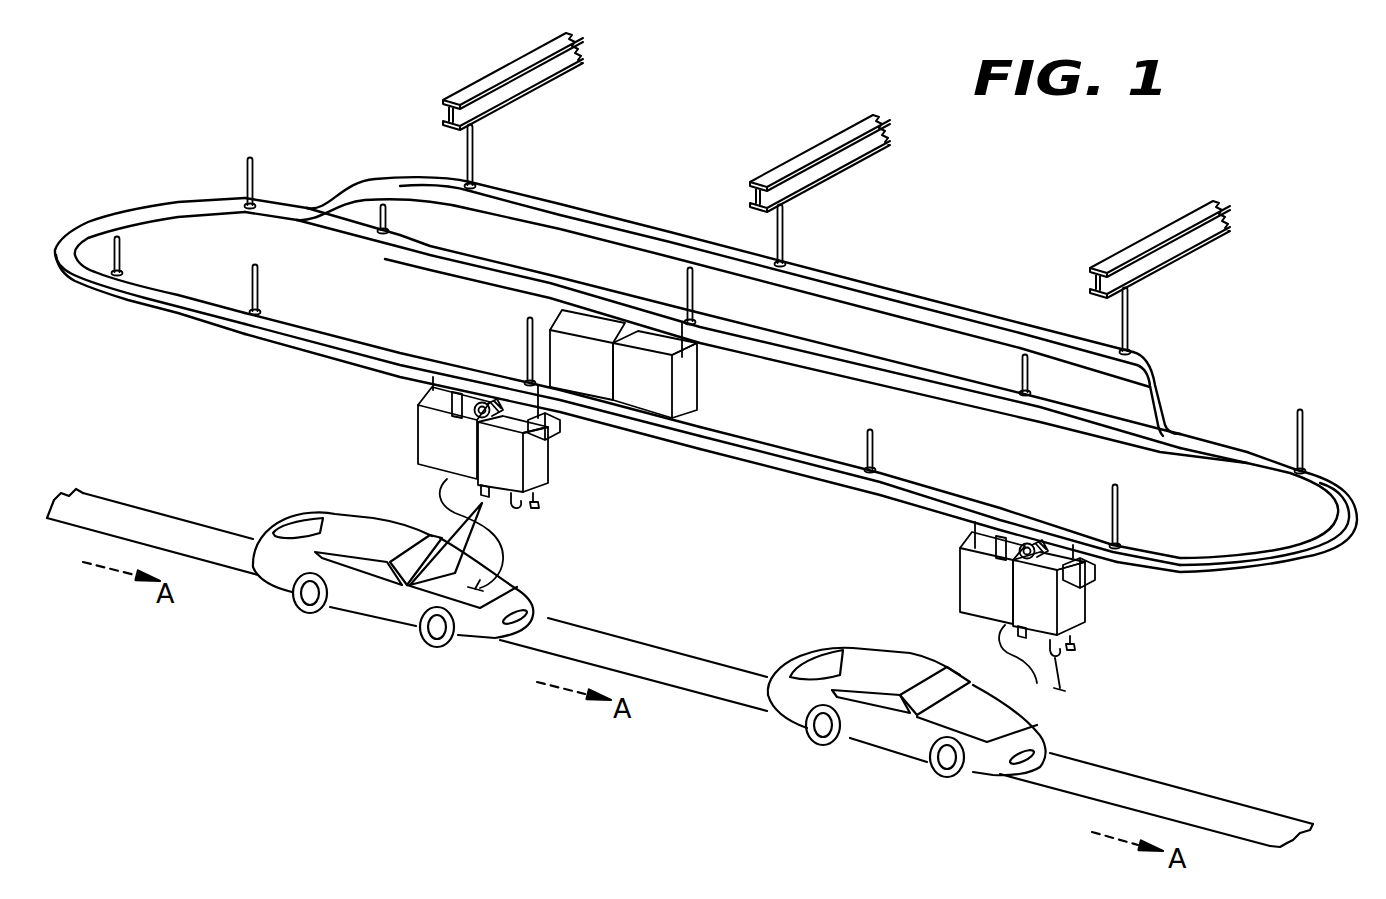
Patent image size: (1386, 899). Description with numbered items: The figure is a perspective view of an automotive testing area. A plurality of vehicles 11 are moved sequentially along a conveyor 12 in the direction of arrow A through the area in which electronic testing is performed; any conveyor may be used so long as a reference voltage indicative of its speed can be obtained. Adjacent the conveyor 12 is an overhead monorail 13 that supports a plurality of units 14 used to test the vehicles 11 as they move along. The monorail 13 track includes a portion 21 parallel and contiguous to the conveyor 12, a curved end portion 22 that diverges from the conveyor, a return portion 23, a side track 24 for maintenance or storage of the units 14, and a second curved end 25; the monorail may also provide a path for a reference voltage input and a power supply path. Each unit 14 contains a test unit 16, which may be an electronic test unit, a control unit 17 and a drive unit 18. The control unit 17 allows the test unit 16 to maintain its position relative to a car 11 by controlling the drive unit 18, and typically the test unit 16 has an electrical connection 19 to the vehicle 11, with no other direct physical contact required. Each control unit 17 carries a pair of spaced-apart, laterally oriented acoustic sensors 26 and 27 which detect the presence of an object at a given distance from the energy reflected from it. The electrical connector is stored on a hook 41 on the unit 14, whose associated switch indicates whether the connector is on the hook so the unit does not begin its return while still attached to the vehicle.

The vehicle 11 is at (358, 630).
The conveyor 12 is at (130, 489).
The monorail 13 is at (144, 320).
The unit 14 is at (733, 528).
The test unit 16 is at (432, 446).
The control unit 17 is at (540, 464).
The drive unit 18 is at (484, 402).
The electrical connection 19 is at (494, 569).
The parallel portion 21 is at (287, 338).
The curved end portion 22 is at (1215, 552).
The return portion 23 is at (428, 258).
The side track 24 is at (601, 213).
The second curved end 25 is at (150, 200).
The sensor 26 is at (443, 486).
The sensor 27 is at (540, 500).
The hook 41 is at (514, 508).